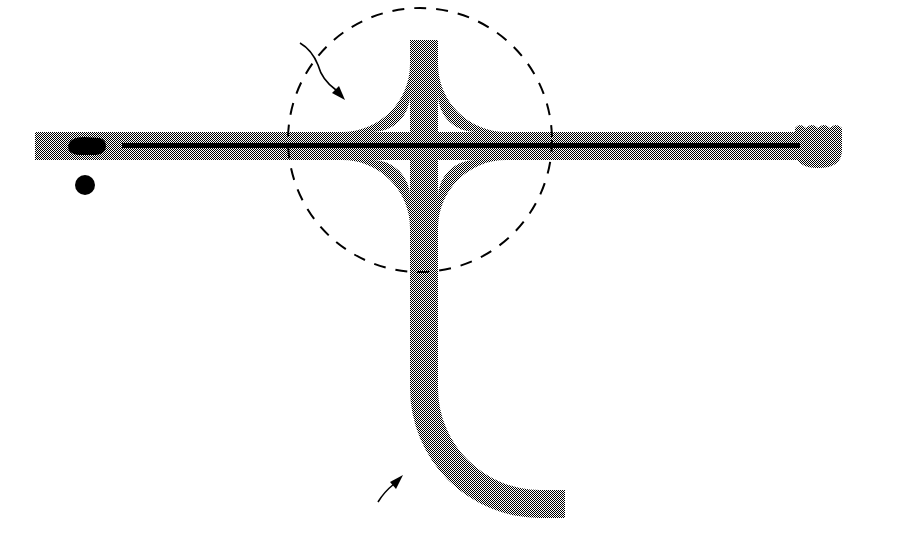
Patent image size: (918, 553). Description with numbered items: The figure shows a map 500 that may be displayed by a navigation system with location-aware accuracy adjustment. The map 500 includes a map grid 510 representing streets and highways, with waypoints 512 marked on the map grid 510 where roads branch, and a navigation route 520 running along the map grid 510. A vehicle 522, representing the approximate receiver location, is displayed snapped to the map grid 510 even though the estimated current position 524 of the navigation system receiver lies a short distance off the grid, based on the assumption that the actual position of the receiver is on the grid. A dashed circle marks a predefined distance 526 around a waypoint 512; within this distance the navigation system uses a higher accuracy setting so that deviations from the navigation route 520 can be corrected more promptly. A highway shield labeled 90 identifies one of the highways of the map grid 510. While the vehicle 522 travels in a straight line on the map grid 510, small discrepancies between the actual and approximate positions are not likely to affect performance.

The map 500 is at (172, 46).
The map grid 510 is at (172, 160).
The waypoints 512 is at (339, 272).
The navigation route 520 is at (208, 132).
The vehicle 522 is at (85, 134).
The estimated current position 524 is at (74, 186).
The predefined distance 526 is at (313, 220).
The Interstate 90 route shield 90 is at (818, 146).